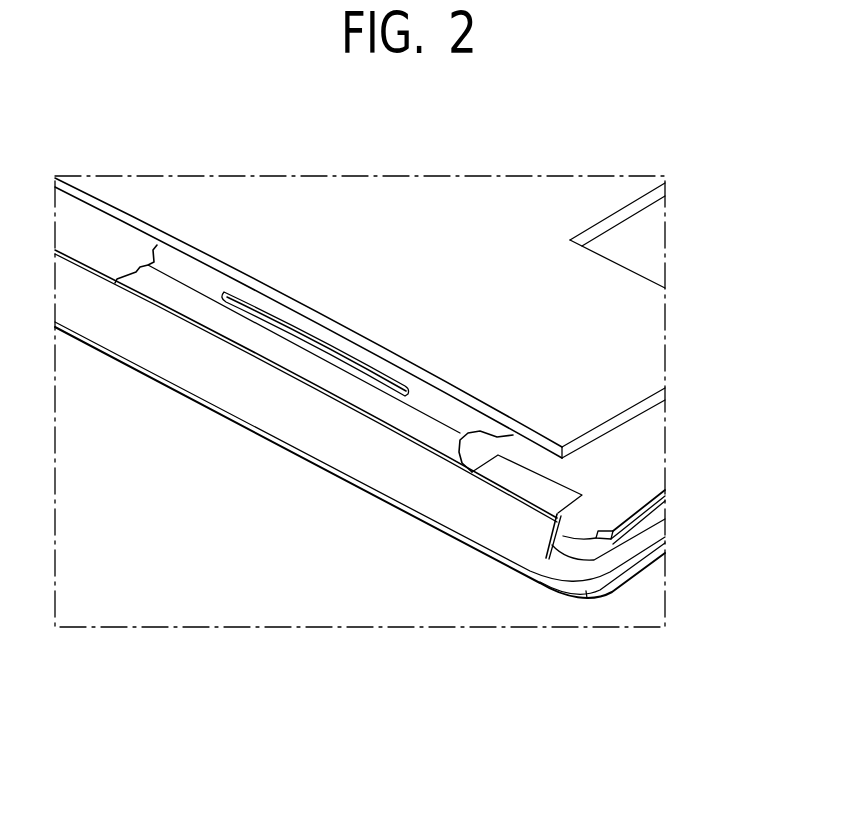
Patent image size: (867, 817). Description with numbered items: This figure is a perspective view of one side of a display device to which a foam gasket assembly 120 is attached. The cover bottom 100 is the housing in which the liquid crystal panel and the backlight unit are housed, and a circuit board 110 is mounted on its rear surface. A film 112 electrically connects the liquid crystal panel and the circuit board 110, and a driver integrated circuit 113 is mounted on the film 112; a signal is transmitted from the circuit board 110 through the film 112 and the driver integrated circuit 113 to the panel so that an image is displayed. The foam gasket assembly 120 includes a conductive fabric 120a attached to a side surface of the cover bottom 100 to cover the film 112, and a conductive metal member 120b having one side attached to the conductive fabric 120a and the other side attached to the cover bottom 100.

The cover bottom 100 is at (645, 467).
The circuit board 110 is at (643, 348).
The film 112 is at (468, 423).
The driver integrated circuit 113 is at (315, 342).
The foam gasket assembly 120 is at (489, 703).
The conductive fabric 120a is at (447, 500).
The conductive metal member 120b is at (527, 485).